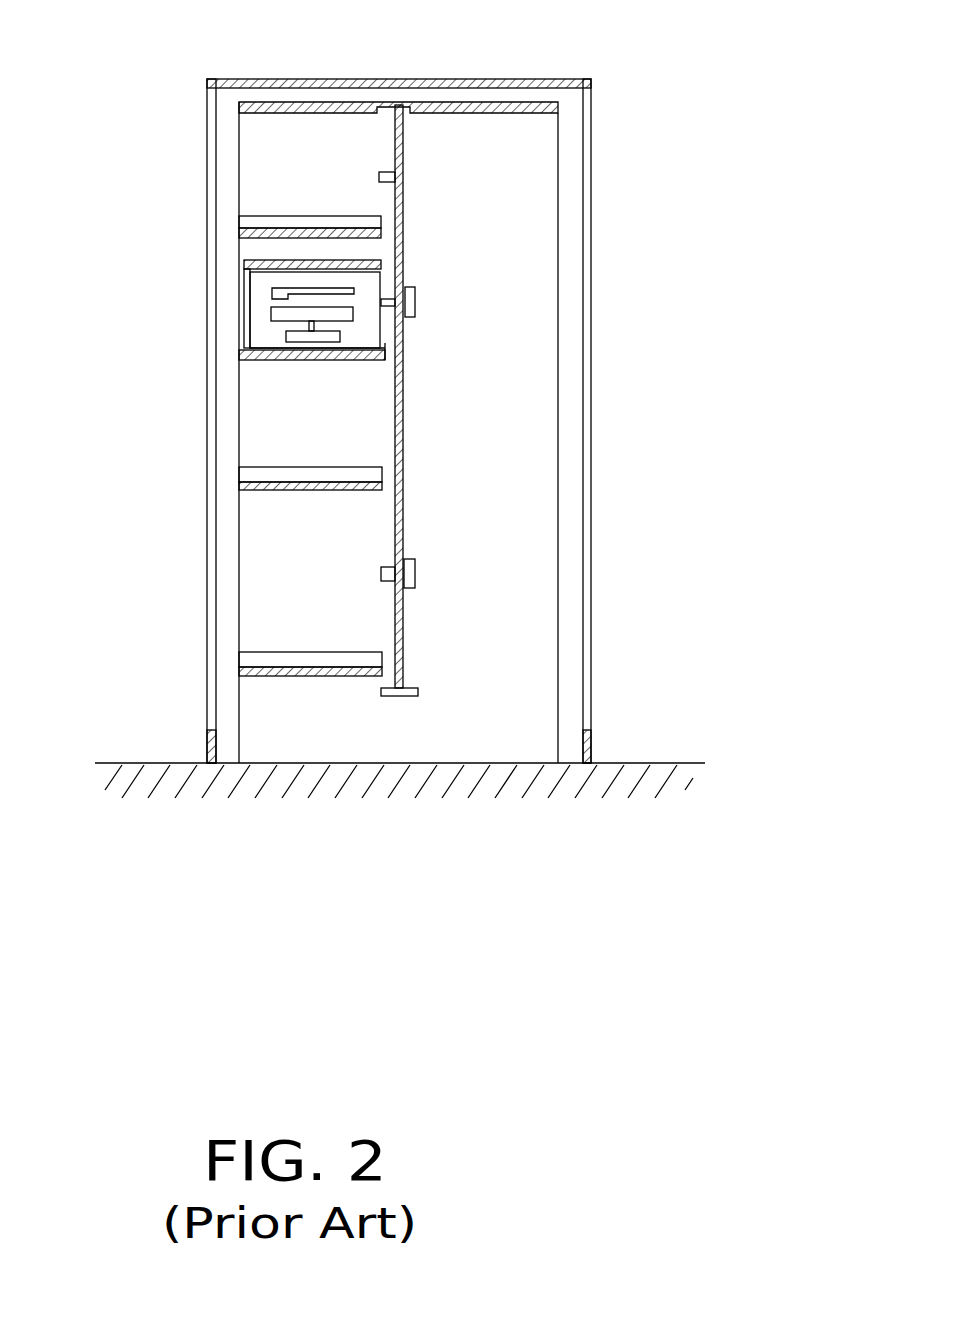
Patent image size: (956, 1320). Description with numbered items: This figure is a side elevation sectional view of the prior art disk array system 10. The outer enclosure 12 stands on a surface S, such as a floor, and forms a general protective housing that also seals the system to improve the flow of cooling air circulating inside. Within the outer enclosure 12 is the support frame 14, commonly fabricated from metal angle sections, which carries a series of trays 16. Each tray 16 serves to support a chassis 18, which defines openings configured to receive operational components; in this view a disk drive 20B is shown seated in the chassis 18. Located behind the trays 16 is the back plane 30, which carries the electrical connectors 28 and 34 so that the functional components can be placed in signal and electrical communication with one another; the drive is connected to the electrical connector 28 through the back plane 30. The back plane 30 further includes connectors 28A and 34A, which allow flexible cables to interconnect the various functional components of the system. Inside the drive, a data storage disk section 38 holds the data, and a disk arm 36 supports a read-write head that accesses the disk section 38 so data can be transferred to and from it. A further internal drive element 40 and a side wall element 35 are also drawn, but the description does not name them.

The disk array system 10 is at (672, 29).
The outer enclosure 12 is at (244, 84).
The support frame 14 is at (513, 113).
The trays 16 is at (292, 222).
The chassis 18 is at (245, 262).
The disk drive 20B is at (383, 332).
The electrical connector 28 is at (380, 177).
The connector 28A is at (417, 303).
The back plane 30 is at (404, 213).
The electrical connector 34 is at (381, 574).
The connector 34A is at (416, 577).
The side wall 35 is at (540, 395).
The disk arm 36 is at (272, 293).
The data storage disk section 38 is at (271, 316).
The component in tray 40 is at (286, 338).
The surface S is at (652, 768).